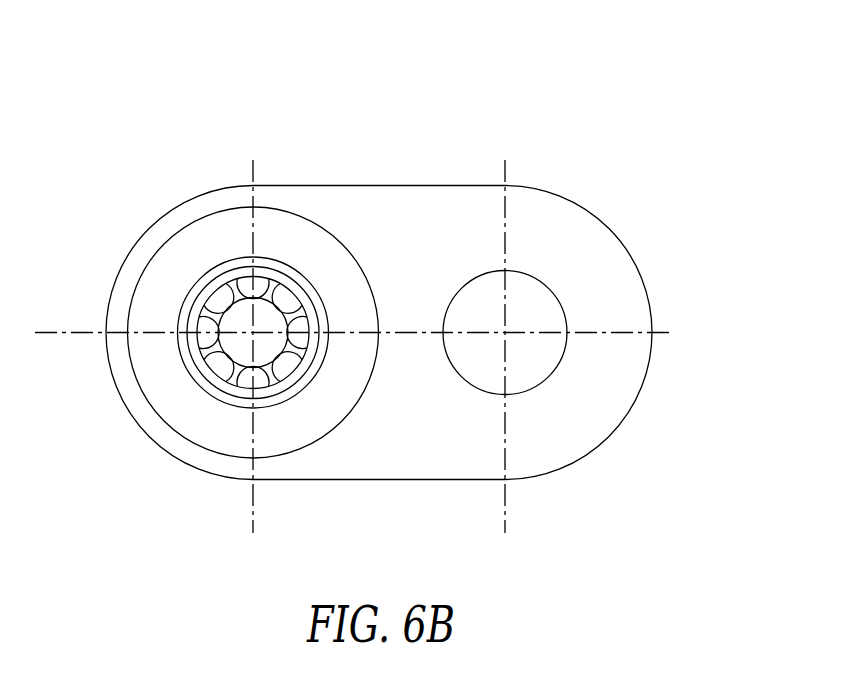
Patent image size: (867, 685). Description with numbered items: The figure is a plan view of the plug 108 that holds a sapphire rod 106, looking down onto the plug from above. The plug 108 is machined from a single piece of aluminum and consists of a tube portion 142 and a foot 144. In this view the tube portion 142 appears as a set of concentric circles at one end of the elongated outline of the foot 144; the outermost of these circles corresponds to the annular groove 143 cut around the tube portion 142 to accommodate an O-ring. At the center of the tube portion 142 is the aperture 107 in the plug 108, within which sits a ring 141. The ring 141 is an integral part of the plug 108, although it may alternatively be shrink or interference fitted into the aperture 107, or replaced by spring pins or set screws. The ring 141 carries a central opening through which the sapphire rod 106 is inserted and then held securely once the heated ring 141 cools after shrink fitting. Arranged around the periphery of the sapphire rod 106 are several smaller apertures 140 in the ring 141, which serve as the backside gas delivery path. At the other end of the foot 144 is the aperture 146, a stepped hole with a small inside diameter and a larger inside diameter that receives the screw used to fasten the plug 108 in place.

The sapphire rod 106 is at (267, 305).
The aperture 107 is at (278, 393).
The plug 108 is at (652, 120).
The smaller apertures 140 is at (246, 281).
The ring 141 is at (200, 350).
The tube portion 142 is at (360, 268).
The annular groove 143 is at (142, 303).
The foot 144 is at (612, 233).
The aperture 146 is at (540, 298).